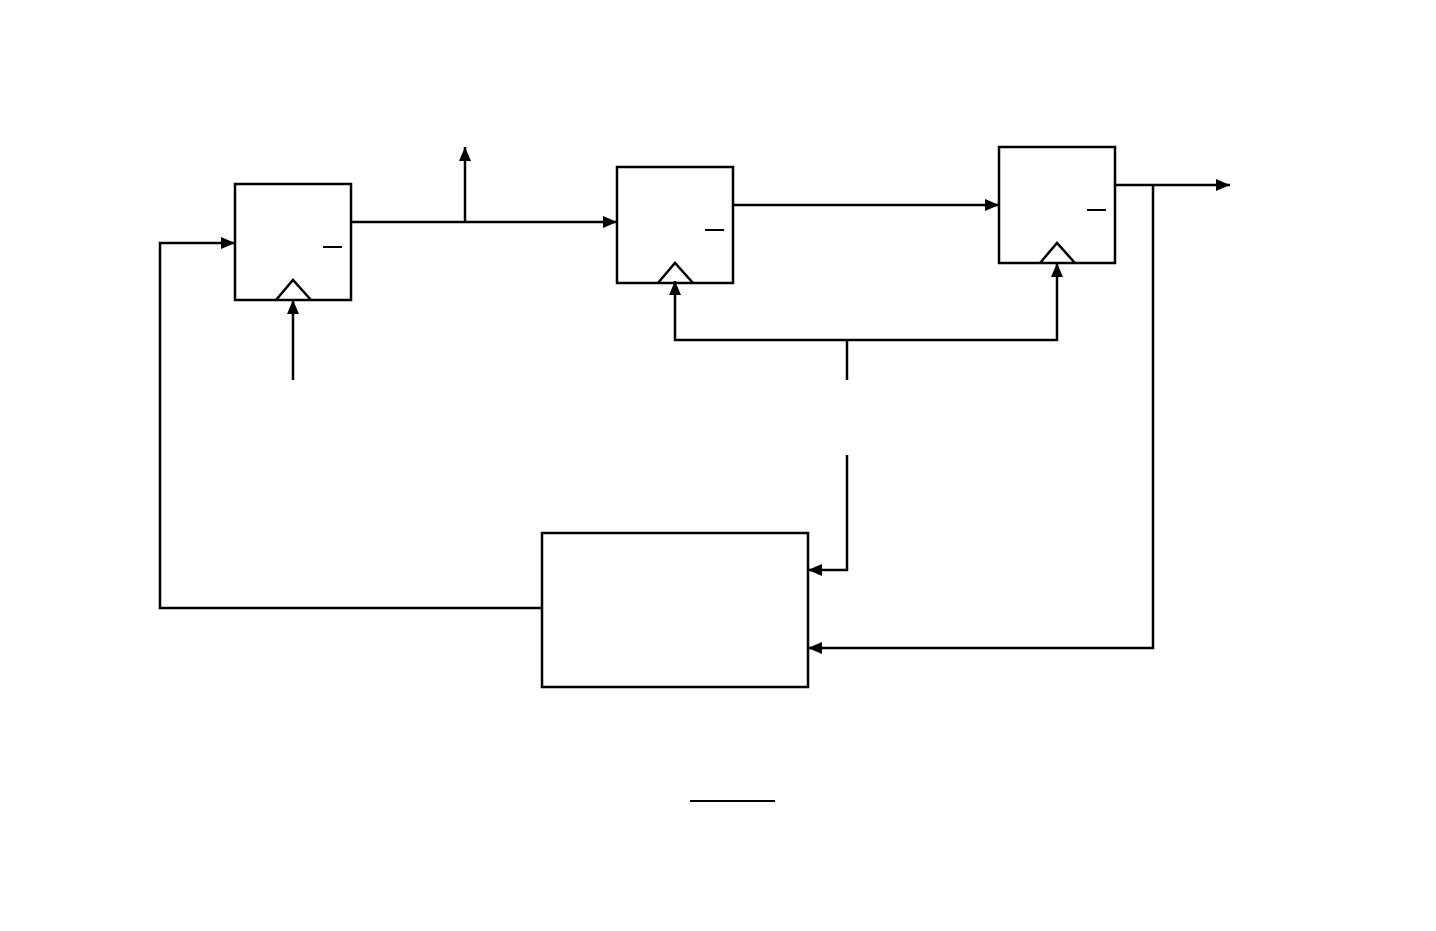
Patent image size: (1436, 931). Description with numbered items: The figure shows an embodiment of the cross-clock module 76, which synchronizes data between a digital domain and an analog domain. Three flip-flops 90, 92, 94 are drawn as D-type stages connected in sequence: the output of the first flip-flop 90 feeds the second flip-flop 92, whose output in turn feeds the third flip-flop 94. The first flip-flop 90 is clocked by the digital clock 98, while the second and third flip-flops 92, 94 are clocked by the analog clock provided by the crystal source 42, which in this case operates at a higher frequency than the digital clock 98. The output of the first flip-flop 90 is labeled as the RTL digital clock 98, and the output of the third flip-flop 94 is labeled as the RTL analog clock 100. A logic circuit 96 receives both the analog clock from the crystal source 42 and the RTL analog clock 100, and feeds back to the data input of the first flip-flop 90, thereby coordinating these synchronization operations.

The flip-flop 90 is at (293, 226).
The flip-flop 92 is at (675, 208).
The flip-flop 94 is at (1057, 188).
The logic circuit 96 is at (484, 462).
The digital clock 98 is at (484, 153).
The RTL analog clock 100 is at (1397, 137).
The crystal source 42 is at (866, 419).
The cross-clock module 76 is at (791, 456).